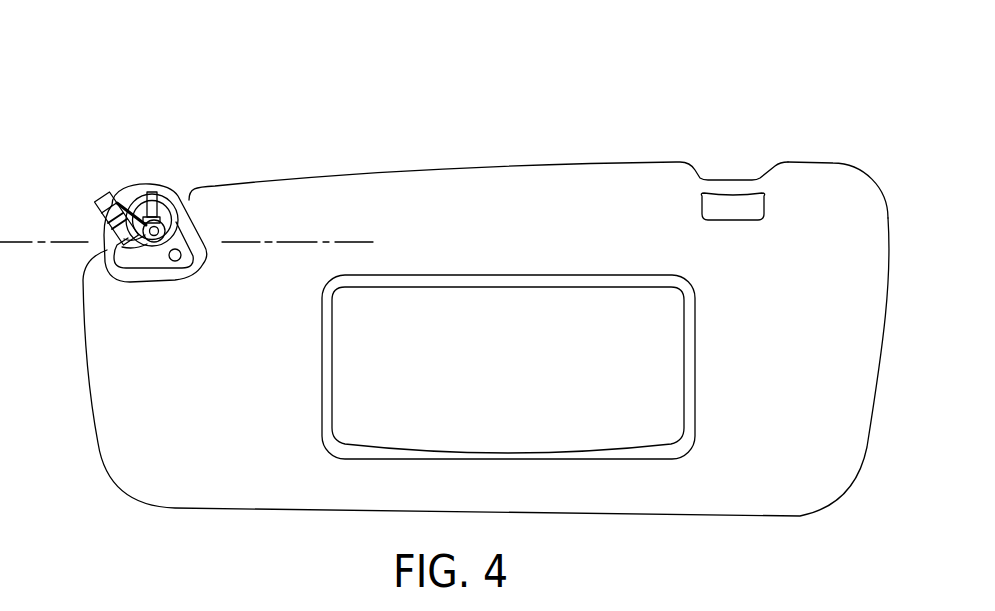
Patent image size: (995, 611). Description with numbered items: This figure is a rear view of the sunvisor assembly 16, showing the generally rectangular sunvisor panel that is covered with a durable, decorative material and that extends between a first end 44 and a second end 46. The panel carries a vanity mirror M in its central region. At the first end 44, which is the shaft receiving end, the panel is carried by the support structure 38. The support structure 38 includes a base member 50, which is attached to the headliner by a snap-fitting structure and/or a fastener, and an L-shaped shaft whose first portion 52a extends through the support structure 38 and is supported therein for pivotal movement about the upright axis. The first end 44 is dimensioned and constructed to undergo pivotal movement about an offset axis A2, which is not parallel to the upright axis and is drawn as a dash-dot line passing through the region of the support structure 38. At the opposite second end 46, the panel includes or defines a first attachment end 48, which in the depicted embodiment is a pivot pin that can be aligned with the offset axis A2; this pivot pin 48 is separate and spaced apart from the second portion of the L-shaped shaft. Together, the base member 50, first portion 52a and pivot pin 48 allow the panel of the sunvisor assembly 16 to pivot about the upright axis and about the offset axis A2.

The sunvisor assembly 16 is at (444, 292).
The support structure 38 is at (184, 201).
The first end 44 is at (189, 200).
The second end 46 is at (805, 161).
The first attachment end 48 is at (725, 190).
The base member 50 is at (192, 227).
The first portion 52a is at (166, 192).
The vanity mirror M is at (618, 358).
The offset axis A2 is at (302, 242).